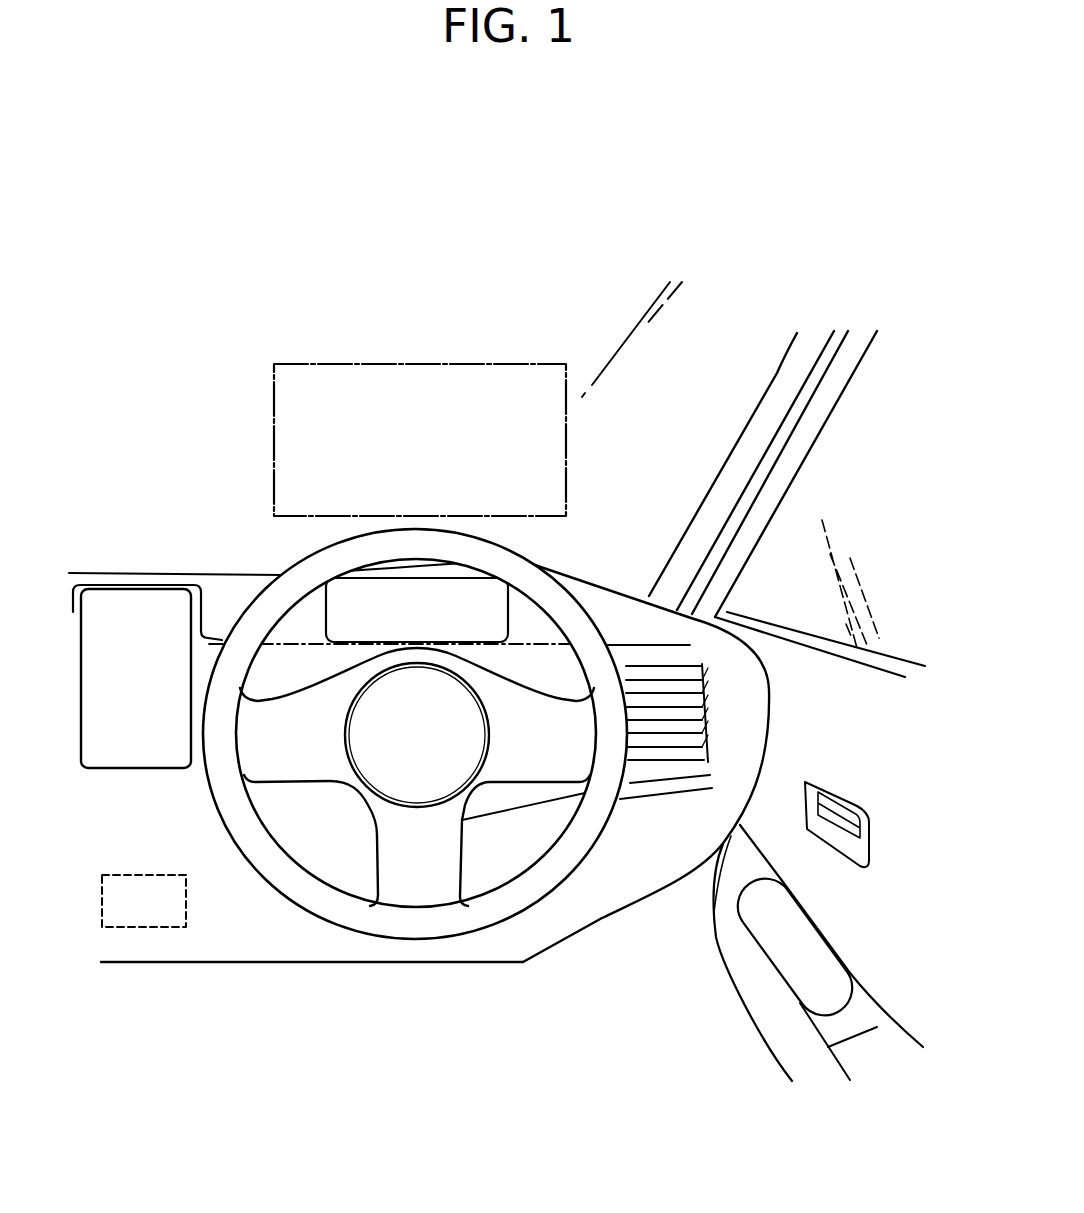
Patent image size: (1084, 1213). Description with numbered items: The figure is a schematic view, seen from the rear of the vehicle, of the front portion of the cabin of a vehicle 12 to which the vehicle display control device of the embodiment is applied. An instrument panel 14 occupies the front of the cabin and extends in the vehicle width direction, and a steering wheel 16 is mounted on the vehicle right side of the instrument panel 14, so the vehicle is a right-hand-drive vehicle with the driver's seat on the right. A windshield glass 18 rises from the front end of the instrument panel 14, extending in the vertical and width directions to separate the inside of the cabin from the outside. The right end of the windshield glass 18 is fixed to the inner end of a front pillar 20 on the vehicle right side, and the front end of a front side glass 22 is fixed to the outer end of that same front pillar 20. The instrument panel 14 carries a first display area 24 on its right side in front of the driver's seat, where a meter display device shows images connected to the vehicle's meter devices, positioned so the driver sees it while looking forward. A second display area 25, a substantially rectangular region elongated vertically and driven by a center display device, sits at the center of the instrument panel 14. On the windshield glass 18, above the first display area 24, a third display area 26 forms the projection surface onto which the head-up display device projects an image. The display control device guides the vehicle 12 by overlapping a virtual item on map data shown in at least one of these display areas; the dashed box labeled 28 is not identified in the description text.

The vehicle 12 is at (403, 226).
The instrument panel 14 is at (613, 915).
The steering wheel 16 is at (592, 607).
The windshield glass 18 is at (704, 451).
The front pillar 20 is at (777, 376).
The front side glass 22 is at (902, 608).
The first display area 24 is at (357, 603).
The second display area 25 is at (139, 748).
The third display area 26 is at (421, 364).
The controller 28 is at (136, 927).